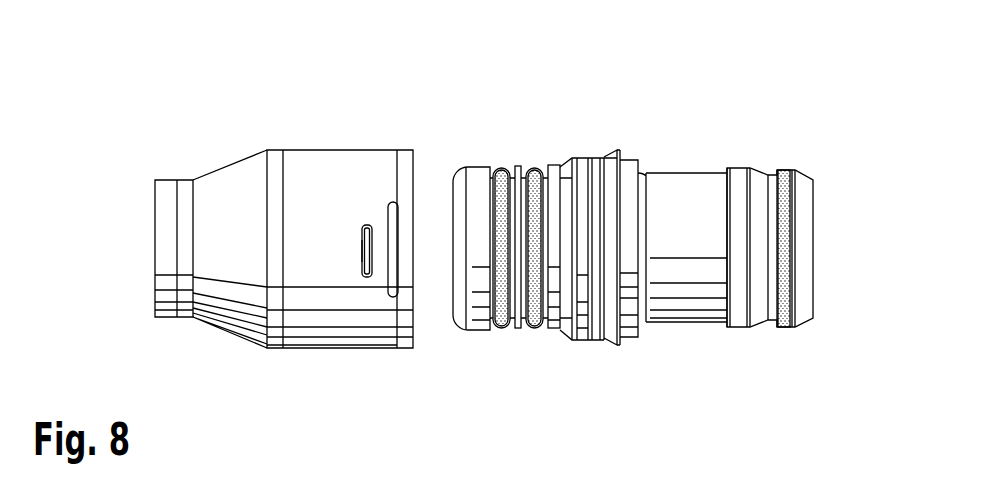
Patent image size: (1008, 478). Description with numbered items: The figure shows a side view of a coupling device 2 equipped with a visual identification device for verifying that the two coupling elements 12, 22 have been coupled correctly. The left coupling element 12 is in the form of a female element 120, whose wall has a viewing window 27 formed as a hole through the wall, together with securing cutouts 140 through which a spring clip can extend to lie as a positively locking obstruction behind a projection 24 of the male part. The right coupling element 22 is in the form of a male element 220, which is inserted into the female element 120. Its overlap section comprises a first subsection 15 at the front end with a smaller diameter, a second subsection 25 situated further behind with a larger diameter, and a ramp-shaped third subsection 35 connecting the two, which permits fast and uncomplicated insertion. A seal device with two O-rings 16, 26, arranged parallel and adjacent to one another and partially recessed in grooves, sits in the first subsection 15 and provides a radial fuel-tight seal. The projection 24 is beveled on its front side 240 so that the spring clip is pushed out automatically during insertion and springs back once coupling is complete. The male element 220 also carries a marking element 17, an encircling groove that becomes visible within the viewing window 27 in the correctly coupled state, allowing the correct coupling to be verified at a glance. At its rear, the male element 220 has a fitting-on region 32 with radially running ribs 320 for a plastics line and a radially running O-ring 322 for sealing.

The coupling device 2 is at (185, 120).
The coupling element 12 is at (230, 338).
The female element 120 is at (318, 302).
The securing cutouts 140 is at (395, 267).
The marking element 17 is at (362, 253).
The viewing window 27 is at (358, 220).
The coupling element 22 is at (472, 143).
The male element 220 is at (558, 162).
The O-ring 16 is at (503, 327).
The O-ring 26 is at (540, 325).
The first subsection 15 is at (555, 338).
The third subsection 35 is at (567, 338).
The second subsection 25 is at (602, 342).
The projection 24 is at (620, 260).
The front side 240 is at (605, 227).
The fitting-on region 32 is at (770, 347).
The ribs 320 is at (735, 183).
The O-ring 322 is at (787, 170).